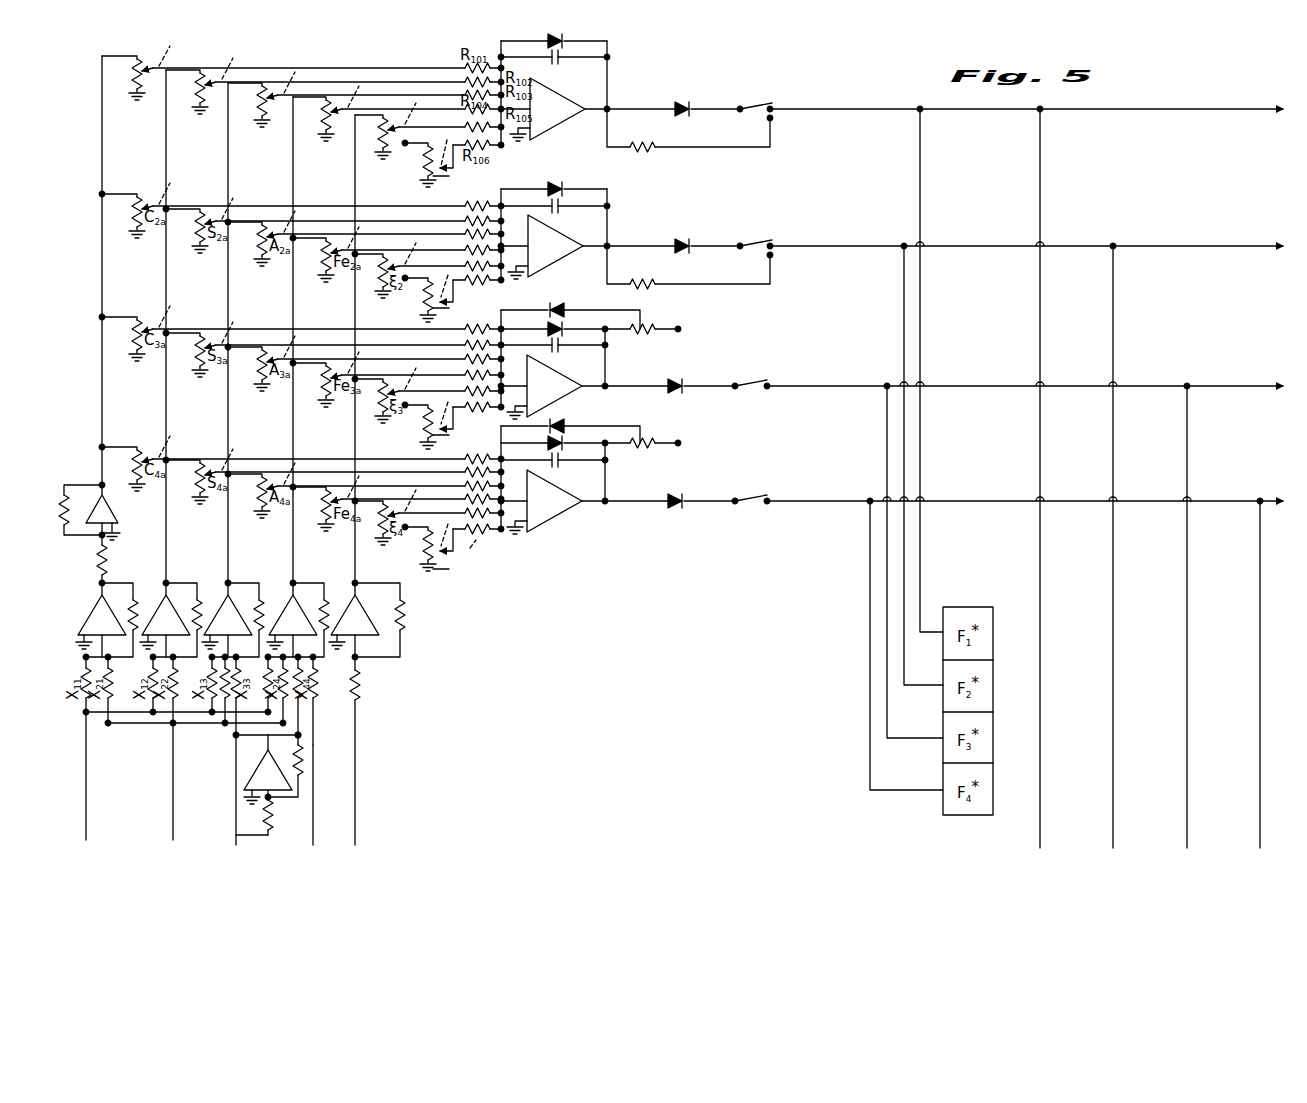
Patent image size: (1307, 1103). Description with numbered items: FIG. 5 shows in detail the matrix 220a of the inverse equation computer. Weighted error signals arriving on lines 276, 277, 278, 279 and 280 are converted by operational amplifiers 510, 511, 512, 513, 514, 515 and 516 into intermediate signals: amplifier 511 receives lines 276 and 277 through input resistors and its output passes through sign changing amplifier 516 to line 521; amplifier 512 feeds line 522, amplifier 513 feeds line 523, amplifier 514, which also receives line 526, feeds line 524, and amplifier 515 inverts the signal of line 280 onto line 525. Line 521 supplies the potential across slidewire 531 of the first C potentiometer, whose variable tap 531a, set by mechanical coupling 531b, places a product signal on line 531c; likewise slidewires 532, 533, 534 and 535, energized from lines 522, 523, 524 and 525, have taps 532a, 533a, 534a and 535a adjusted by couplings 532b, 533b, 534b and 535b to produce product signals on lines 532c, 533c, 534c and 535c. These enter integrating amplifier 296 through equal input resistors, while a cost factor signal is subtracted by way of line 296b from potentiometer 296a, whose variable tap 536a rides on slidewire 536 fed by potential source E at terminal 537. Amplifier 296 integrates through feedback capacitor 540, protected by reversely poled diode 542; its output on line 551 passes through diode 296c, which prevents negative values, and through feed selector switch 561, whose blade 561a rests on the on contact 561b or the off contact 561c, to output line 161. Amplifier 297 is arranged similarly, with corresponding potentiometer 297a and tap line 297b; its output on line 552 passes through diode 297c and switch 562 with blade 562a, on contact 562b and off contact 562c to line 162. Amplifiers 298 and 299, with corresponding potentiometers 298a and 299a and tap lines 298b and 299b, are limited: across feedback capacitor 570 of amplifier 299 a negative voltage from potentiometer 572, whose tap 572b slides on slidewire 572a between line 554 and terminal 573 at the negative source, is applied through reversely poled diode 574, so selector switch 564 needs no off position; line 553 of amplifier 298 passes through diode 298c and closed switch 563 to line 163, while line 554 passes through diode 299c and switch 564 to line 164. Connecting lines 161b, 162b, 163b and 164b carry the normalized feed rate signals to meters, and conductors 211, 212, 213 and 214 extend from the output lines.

The slidewire 531 is at (130, 66).
The variable tap 531a is at (152, 64).
The mechanical coupling 531b is at (171, 47).
The line 531c is at (258, 66).
The slidewire 532 is at (198, 92).
The adjustable tap 532a is at (215, 80).
The mechanical coupling 532b is at (234, 56).
The line 532c is at (353, 80).
The slidewire 533 is at (260, 108).
The adjustable tap 533a is at (277, 92).
The mechanical coupling 533b is at (297, 84).
The line 533c is at (410, 93).
The slidewire 534 is at (324, 122).
The adjustable tap 534a is at (343, 106).
The mechanical coupling 534b is at (362, 92).
The line 534c is at (432, 107).
The slidewire 535 is at (378, 140).
The adjustable tap 535a is at (397, 119).
The mechanical coupling 535b is at (411, 128).
The line 535c is at (462, 125).
The potentiometer slidewire 536 is at (437, 168).
The variable tap 536a is at (451, 144).
The terminal 537 is at (426, 160).
The feedback capacitor 540 is at (560, 64).
The reversely poled diode 542 is at (566, 44).
The output line 551 is at (629, 106).
The output line 552 is at (629, 244).
The output line 553 is at (631, 382).
The output line 554 is at (637, 505).
The integrating amplifier 296 is at (609, 137).
The potentiometer 296a is at (410, 192).
The line 296b is at (455, 160).
The diode 296c is at (683, 100).
The integrating amplifier 297 is at (606, 275).
The alpha potentiometer 297a is at (420, 311).
The wiper conductor 297b is at (455, 288).
The diode 297c is at (683, 238).
The integrating amplifier 298 is at (609, 415).
The alpha potentiometer 298a is at (420, 440).
The wiper conductor 298b is at (455, 413).
The diode 298c is at (678, 377).
The integrating amplifier 299 is at (591, 530).
The alpha potentiometer 299a is at (420, 563).
The wiper conductor 299b is at (455, 541).
The diode 299c is at (676, 496).
The feed selector switch 561 is at (780, 93).
The switch blade 561a is at (742, 112).
The fixed contact 561b is at (778, 104).
The contact 561c is at (773, 119).
The selector switch 562 is at (780, 229).
The switch blade 562a is at (742, 250).
The on contact 562b is at (778, 241).
The switch contact 562c is at (773, 256).
The selector switch 563 is at (771, 412).
The feed stream selector switch 564 is at (771, 526).
The feedback capacitor 570 is at (553, 465).
The potentiometer 572 is at (641, 464).
The slidewire 572a is at (652, 446).
The variable tap 572b is at (638, 436).
The terminal 573 is at (679, 441).
The reversely poled diode 574 is at (556, 421).
The output line 161 is at (1146, 109).
The output line 162 is at (1153, 247).
The output line 163 is at (1240, 382).
The output line 164 is at (1238, 490).
The connecting line 161b is at (922, 528).
The connecting line 162b is at (906, 553).
The connecting line 163b is at (885, 577).
The connecting line 164b is at (868, 607).
The conductor 211 is at (1038, 575).
The conductor 212 is at (1111, 598).
The conductor 213 is at (1185, 625).
The conductor 214 is at (1258, 655).
The line 521 is at (102, 465).
The line 522 is at (168, 553).
The line 523 is at (230, 546).
The line 524 is at (295, 558).
The line 525 is at (357, 567).
The line 526 is at (296, 730).
The sign changing amplifier 516 is at (110, 518).
The operational amplifier 510 is at (268, 785).
The amplifier 511 is at (107, 620).
The amplifier 512 is at (171, 620).
The amplifier 513 is at (233, 620).
The amplifier 514 is at (297, 620).
The amplifier 515 is at (367, 620).
The input line 276 is at (87, 803).
The input line 277 is at (174, 803).
The input line 278 is at (225, 835).
The input line 279 is at (313, 820).
The input line 280 is at (357, 815).
The matrix 220a is at (485, 572).